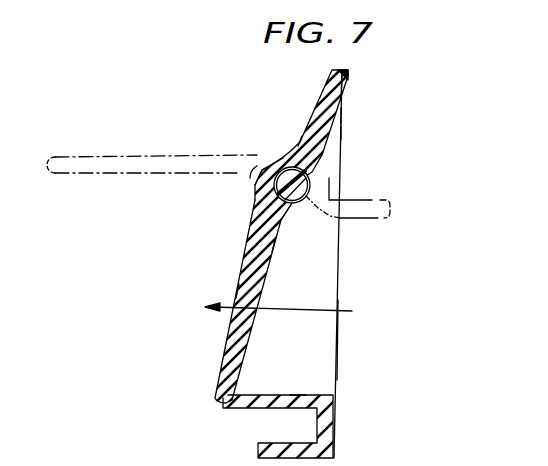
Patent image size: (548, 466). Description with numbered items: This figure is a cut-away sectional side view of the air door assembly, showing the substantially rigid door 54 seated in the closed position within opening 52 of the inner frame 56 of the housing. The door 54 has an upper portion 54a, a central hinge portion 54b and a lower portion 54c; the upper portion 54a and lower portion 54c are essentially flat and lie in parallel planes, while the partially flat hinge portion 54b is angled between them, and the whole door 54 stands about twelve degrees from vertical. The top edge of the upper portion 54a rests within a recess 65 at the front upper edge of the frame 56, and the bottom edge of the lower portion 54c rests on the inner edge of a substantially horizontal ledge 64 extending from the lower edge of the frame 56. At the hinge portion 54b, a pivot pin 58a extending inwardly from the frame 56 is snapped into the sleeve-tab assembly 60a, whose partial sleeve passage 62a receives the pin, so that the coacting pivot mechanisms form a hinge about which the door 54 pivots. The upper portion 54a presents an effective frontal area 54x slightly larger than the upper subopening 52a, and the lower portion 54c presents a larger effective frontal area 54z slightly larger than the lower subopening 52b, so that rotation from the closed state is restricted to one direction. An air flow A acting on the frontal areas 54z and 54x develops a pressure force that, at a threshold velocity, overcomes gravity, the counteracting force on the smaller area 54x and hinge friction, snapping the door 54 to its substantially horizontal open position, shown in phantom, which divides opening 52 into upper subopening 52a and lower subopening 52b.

The opening 52 is at (300, 123).
The upper subopening 52a is at (310, 139).
The lower subopening 52b is at (313, 330).
The door 54 is at (232, 265).
The upper portion 54a is at (352, 118).
The hinge portion 54b is at (245, 202).
The lower portion 54c is at (228, 291).
The upper effective frontal area 54x is at (300, 147).
The lower effective frontal area 54z is at (280, 248).
The inner frame 56 is at (352, 132).
The pivot pin 58a is at (302, 182).
The sleeve-tab assembly 60a is at (290, 147).
The partial sleeve passage 62a is at (256, 168).
The ledge 64 is at (298, 392).
The recess 65 is at (347, 108).
The air flow A is at (285, 310).